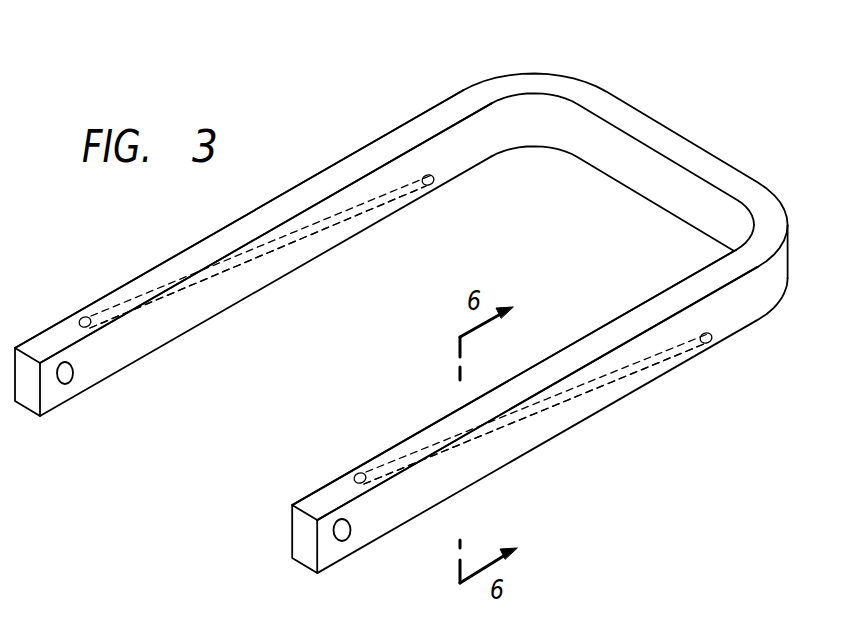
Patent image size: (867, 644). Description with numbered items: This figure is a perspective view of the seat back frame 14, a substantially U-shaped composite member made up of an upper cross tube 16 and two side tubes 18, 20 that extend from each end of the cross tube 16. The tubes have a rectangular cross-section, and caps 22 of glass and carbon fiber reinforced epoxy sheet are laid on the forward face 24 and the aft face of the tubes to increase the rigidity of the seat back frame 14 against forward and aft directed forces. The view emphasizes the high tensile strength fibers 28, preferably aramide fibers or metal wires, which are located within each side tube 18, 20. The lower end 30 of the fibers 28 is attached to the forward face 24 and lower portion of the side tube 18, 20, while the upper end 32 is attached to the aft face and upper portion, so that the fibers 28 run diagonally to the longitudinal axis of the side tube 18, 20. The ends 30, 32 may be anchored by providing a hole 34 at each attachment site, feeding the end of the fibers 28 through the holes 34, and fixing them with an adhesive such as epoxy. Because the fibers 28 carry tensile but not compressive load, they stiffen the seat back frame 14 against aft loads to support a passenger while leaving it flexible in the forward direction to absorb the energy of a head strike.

The seat back frame 14 is at (699, 69).
The upper cross tube 16 is at (730, 165).
The side tube 18 is at (578, 420).
The side tube 20 is at (362, 147).
The cap 22 is at (612, 108).
The forward face 24 is at (450, 110).
The fibers 28 is at (317, 234).
The lower end 30 is at (118, 298).
The upper end 32 is at (407, 197).
The hole 34 is at (85, 318).